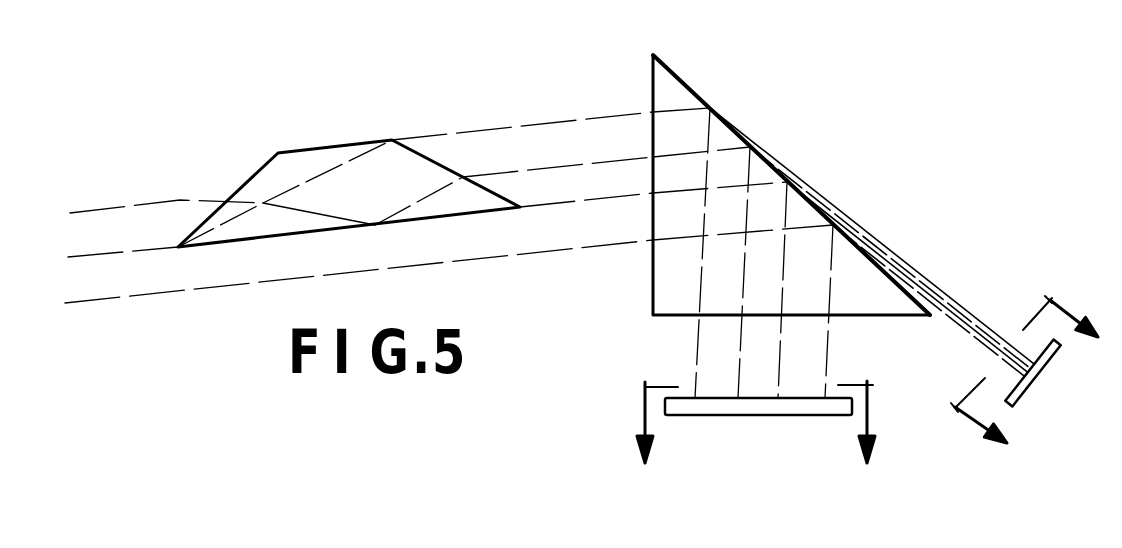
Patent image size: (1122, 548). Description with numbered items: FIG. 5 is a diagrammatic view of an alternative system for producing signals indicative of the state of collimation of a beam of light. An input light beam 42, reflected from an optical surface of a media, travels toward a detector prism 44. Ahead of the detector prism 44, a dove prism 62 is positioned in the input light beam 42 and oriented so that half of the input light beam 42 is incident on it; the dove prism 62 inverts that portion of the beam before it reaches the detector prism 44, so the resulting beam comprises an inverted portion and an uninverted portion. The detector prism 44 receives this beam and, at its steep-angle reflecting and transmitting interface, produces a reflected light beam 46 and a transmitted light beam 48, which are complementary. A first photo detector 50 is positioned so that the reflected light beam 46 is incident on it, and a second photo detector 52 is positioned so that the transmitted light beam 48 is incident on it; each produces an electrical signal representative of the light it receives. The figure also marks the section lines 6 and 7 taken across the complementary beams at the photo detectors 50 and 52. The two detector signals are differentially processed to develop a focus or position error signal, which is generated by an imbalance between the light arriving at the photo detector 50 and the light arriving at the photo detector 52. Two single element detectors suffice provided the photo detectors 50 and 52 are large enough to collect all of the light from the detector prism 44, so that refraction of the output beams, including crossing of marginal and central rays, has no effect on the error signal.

The input light beam 42 is at (588, 118).
The detector prism 44 is at (690, 83).
The reflected light beam 46 is at (827, 382).
The transmitted light beam 48 is at (933, 282).
The first photo detector 50 is at (708, 415).
The second photo detector 52 is at (1053, 362).
The dove prism 62 is at (373, 140).
The section line 6- 6 is at (755, 439).
The section line 7- 7 is at (1034, 377).